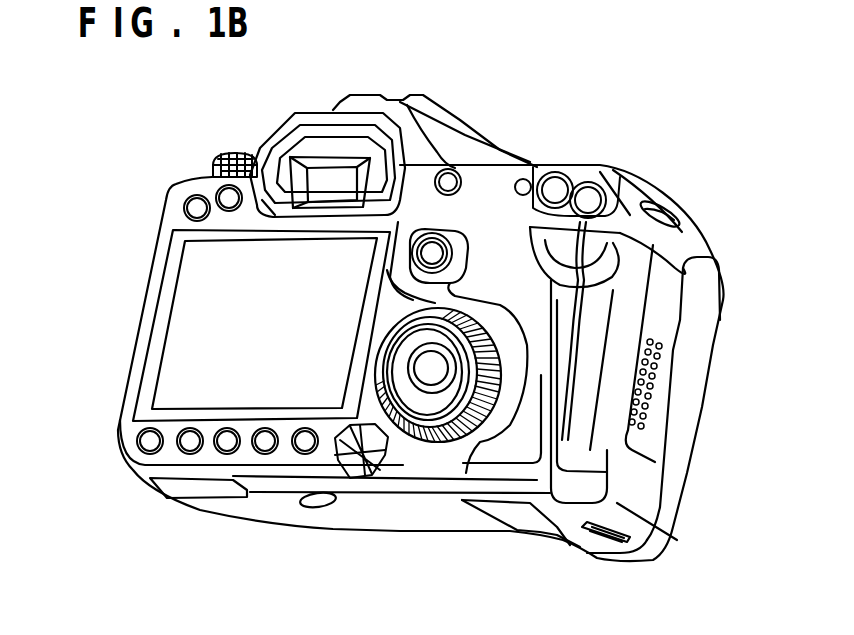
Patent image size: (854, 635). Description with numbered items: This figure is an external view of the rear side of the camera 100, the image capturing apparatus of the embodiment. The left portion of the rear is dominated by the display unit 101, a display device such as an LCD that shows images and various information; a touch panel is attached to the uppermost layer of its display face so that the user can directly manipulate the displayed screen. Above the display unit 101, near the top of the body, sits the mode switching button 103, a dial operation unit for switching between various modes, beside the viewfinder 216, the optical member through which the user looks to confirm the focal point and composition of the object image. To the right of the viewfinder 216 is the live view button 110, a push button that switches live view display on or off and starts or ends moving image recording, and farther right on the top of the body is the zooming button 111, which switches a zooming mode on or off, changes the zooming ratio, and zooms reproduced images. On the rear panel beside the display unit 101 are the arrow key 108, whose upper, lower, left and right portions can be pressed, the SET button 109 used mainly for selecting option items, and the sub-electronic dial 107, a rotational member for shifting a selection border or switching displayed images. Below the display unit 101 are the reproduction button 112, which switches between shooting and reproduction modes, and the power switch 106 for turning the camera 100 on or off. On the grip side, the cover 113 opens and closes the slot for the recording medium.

The camera 100 is at (708, 147).
The display unit 101 is at (208, 277).
The mode switching button 103 is at (218, 156).
The viewfinder 216 is at (335, 180).
The live view button 110 is at (432, 253).
The zooming button 111 is at (582, 200).
The cover 113 is at (627, 368).
The reproduction button 112 is at (302, 445).
The power switch 106 is at (367, 450).
The sub-electronic dial 107 is at (417, 403).
The arrow key 108 is at (432, 445).
The SET button 109 is at (435, 368).